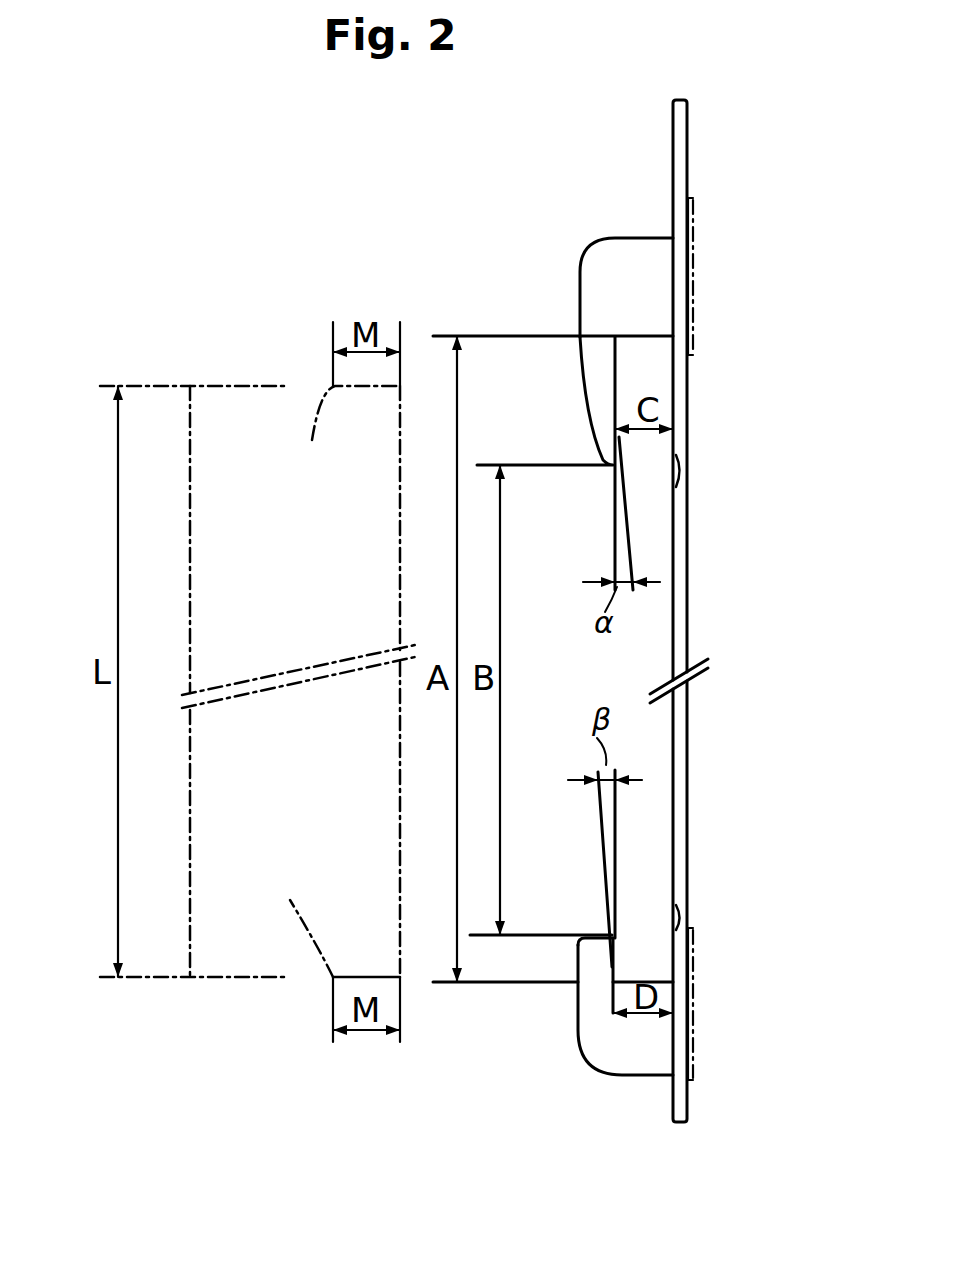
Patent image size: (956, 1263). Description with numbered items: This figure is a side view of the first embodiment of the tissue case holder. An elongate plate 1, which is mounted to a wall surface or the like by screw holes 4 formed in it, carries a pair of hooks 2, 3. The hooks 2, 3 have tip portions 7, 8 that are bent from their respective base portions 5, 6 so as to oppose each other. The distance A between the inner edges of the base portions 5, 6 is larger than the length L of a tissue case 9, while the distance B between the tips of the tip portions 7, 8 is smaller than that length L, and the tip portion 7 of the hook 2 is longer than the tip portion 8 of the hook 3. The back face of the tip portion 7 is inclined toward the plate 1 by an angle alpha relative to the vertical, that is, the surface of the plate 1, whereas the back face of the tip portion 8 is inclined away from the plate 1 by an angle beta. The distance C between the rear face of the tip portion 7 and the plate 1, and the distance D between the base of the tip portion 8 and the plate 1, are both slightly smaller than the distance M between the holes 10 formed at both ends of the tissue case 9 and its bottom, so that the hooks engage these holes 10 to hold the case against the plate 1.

The elongate plate 1 is at (685, 630).
The hook 2 is at (598, 272).
The hook 3 is at (600, 1043).
The screw holes 4 is at (683, 464).
The base portion 5 is at (647, 247).
The base portion 6 is at (643, 1060).
The tip portion 7 is at (598, 380).
The tip portion 8 is at (588, 955).
The tissue case 9 is at (218, 583).
The holes 10 is at (335, 681).